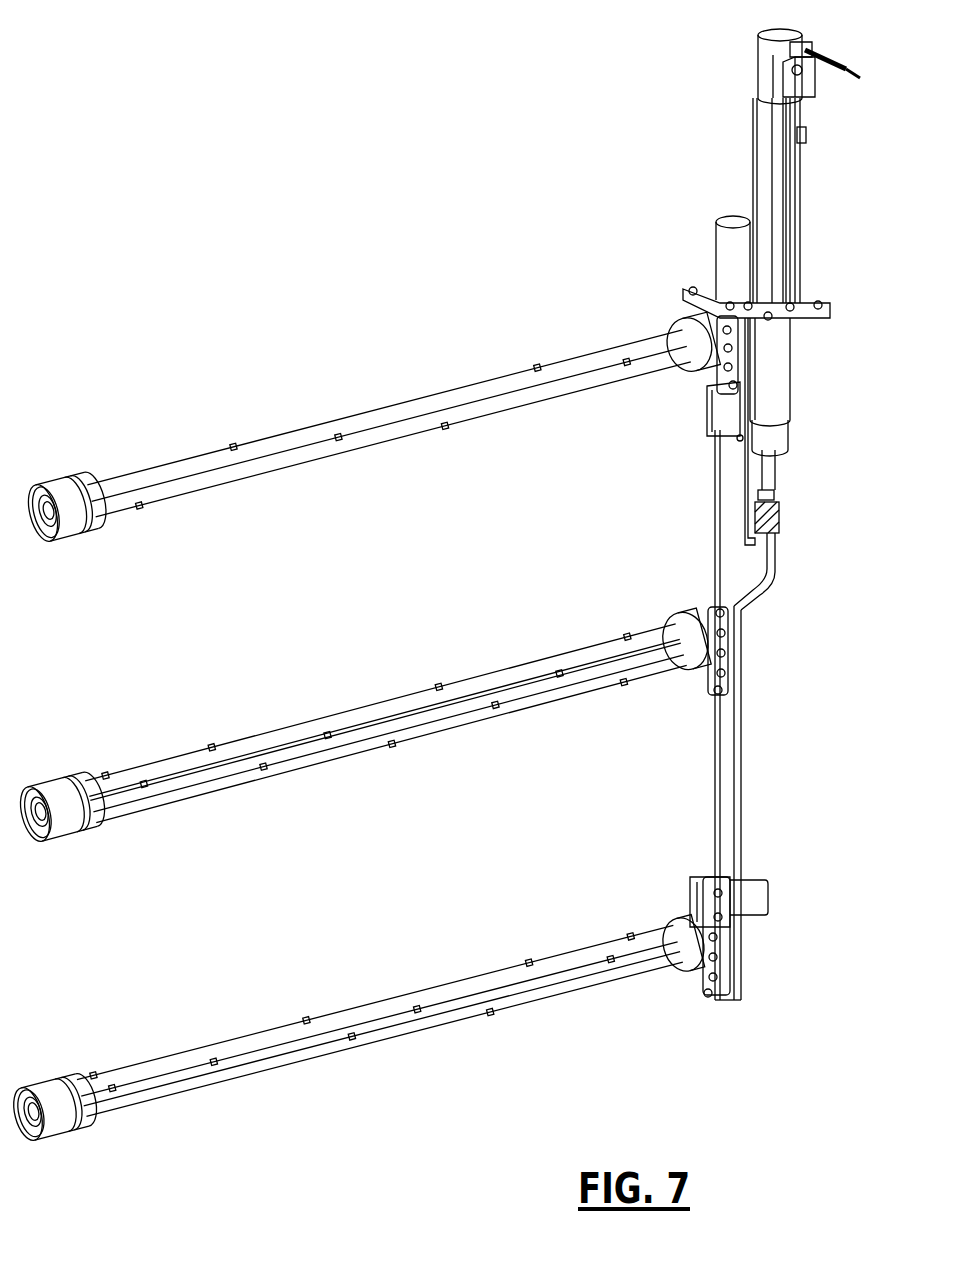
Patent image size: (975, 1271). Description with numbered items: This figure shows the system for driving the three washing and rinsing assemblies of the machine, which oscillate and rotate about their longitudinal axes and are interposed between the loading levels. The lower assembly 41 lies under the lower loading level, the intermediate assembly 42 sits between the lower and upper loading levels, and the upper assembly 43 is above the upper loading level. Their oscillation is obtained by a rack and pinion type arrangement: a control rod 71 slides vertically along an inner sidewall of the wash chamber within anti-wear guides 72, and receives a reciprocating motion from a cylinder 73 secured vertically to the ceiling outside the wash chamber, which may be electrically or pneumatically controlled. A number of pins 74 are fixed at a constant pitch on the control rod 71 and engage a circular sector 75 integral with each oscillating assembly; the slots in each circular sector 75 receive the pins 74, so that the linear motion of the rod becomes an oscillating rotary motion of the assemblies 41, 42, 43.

The lower assembly 41 is at (258, 1048).
The intermediate assembly 42 is at (255, 741).
The upper assembly 43 is at (283, 450).
The control rod 71 is at (723, 797).
The anti-wear guides 72 is at (725, 408).
The cylinder 73 is at (763, 353).
The pins 74 is at (723, 692).
The circular sector 75 is at (710, 667).